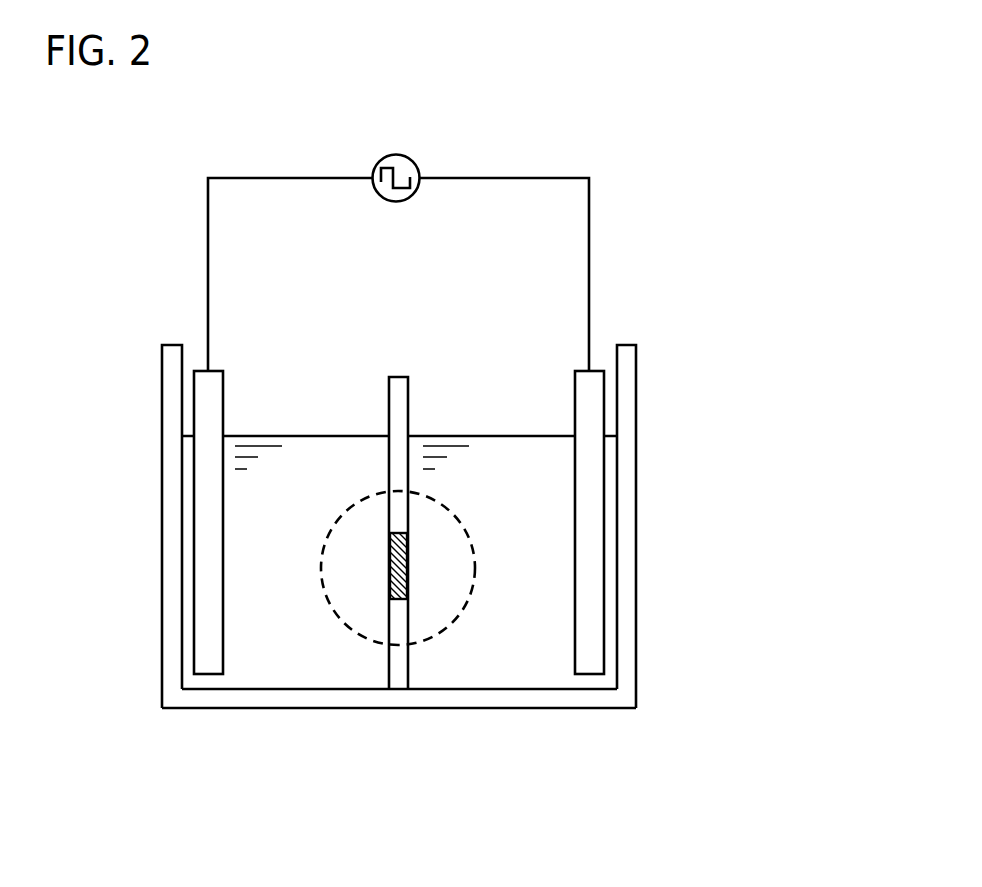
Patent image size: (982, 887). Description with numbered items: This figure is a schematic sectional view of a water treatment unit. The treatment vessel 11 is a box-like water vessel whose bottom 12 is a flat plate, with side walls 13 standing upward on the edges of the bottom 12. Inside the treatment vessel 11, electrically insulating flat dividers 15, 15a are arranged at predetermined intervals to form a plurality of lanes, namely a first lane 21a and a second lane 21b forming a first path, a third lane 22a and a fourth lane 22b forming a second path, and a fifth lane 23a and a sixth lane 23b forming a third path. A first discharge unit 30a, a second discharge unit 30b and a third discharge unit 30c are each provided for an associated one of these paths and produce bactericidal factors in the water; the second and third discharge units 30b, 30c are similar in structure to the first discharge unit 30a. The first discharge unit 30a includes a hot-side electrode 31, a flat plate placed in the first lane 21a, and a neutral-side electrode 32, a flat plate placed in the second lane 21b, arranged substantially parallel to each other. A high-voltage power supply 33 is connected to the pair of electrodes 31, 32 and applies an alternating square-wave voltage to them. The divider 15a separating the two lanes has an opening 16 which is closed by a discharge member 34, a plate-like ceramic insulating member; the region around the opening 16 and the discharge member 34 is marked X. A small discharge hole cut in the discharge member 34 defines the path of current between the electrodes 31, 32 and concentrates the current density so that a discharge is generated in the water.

The treatment vessel 11 is at (399, 561).
The bottom 12 is at (507, 697).
The side wall 13 is at (172, 494).
The divider 15 is at (627, 462).
The divider 15a is at (398, 375).
The opening 16 is at (422, 559).
The first lane 21a is at (285, 482).
The third lane 22a is at (285, 562).
The fifth lane 23a is at (285, 562).
The second lane 21b is at (512, 482).
The fourth lane 22b is at (512, 562).
The sixth lane 23b is at (512, 562).
The first discharge unit 30a is at (524, 238).
The second discharge unit 30b is at (398, 238).
The third discharge unit 30c is at (398, 238).
The hot-side electrode 31 is at (209, 655).
The neutral-side electrode 32 is at (588, 580).
The high-voltage power supply 33 is at (398, 155).
The discharge member 34 is at (390, 571).
The enlarged region X is at (472, 592).